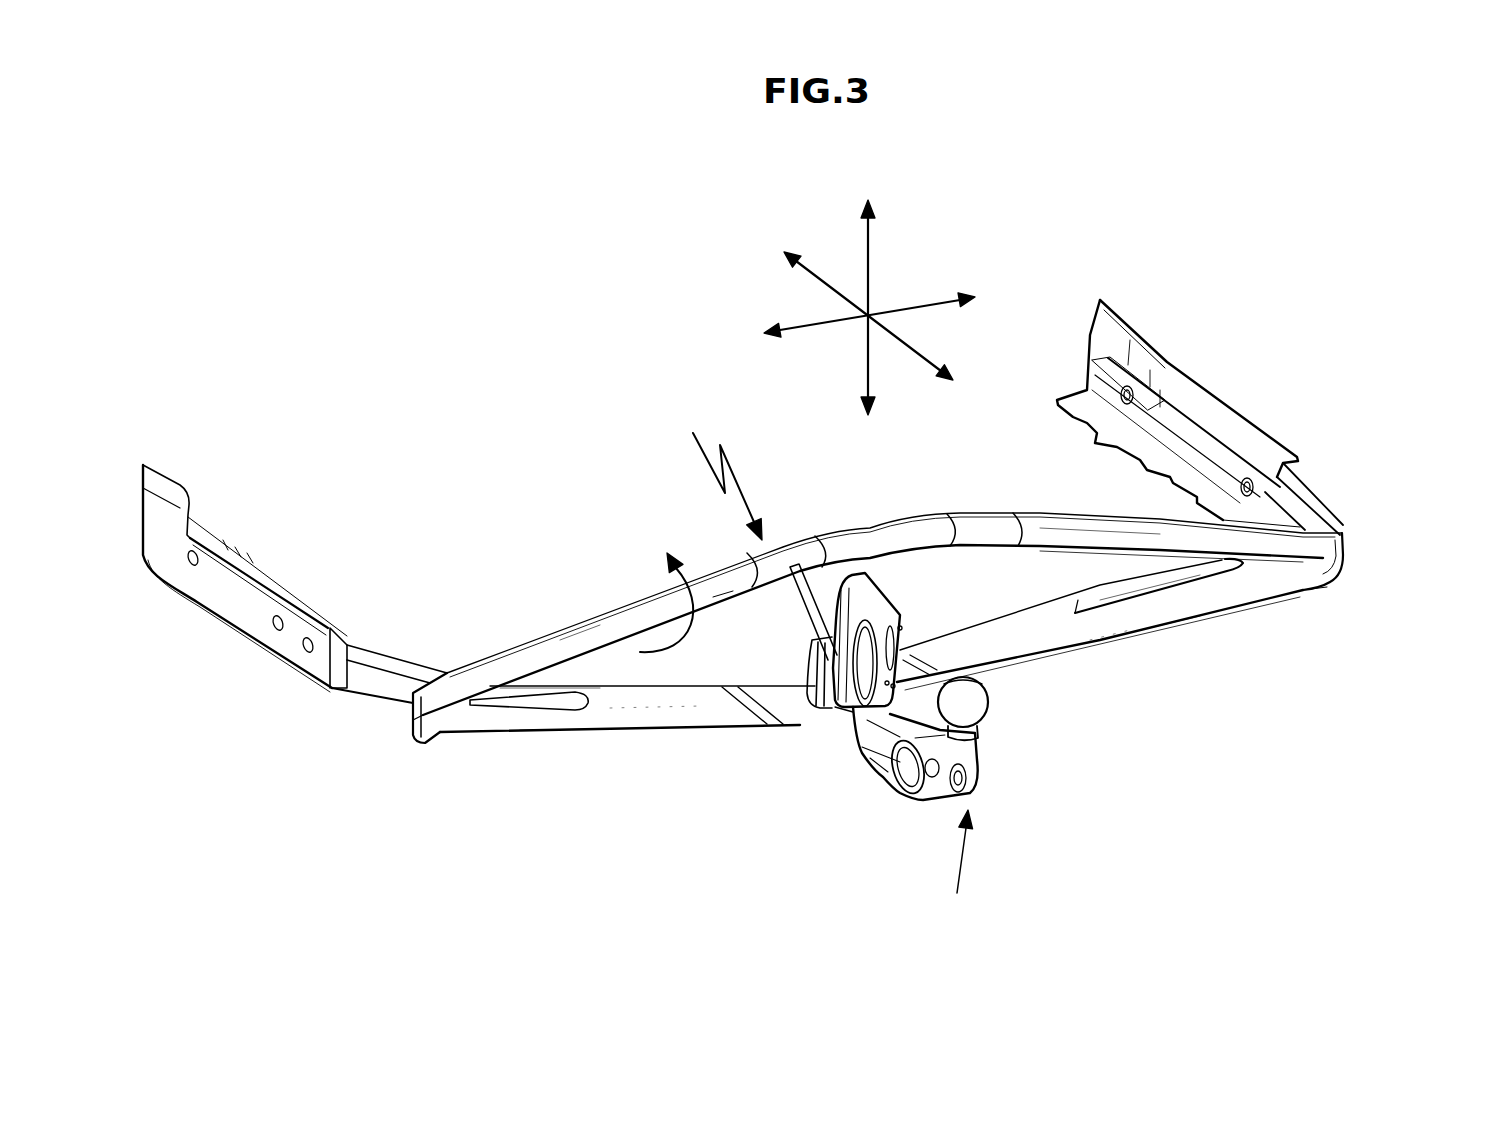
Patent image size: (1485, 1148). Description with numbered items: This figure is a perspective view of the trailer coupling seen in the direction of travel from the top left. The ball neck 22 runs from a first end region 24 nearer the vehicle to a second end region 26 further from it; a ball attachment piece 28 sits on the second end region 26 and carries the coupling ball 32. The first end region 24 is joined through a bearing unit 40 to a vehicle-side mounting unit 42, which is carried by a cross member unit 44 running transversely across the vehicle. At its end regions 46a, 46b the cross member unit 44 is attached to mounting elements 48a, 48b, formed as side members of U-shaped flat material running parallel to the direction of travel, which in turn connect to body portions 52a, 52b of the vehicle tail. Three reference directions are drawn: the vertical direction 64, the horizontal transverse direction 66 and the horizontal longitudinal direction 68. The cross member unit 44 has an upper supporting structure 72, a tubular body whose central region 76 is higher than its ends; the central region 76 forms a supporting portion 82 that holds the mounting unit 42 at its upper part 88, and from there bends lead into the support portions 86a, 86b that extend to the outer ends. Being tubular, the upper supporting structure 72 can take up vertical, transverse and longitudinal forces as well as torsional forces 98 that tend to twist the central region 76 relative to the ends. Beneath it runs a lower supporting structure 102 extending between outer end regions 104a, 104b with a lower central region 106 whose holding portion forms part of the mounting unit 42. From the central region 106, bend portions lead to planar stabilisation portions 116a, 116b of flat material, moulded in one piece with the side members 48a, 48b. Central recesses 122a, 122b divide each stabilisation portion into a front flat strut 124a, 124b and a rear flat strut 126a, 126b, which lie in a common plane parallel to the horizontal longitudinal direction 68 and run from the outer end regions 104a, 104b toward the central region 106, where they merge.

The ball neck 22 is at (959, 869).
The first end region 24 is at (877, 720).
The second end region 26 is at (987, 757).
The ball attachment piece 28 is at (977, 730).
The coupling ball 32 is at (980, 698).
The bearing unit 40 is at (922, 605).
The vehicle-side mounting unit 42 is at (809, 629).
The cross member unit 44 is at (721, 470).
The end region of cross member unit 46a is at (418, 707).
The end region of cross member unit 46b is at (1336, 556).
The mounting element 48a is at (380, 688).
The mounting element 48b is at (1313, 528).
The body portion 52a is at (228, 592).
The body portion 52b is at (1217, 408).
The vertical direction 64 is at (868, 265).
The horizontal transverse direction 66 is at (838, 322).
The horizontal longitudinal direction 68 is at (840, 292).
The upper supporting structure 72 is at (956, 505).
The central region 76 is at (901, 537).
The supporting portion 82 is at (857, 543).
The support portion 86a is at (573, 638).
The support portion 86b is at (1067, 530).
The upper part of mounting unit 88 is at (833, 580).
The torsional forces 98 is at (627, 600).
The lower supporting structure 102 is at (697, 735).
The outer end region of lower supporting structure 104a is at (437, 748).
The outer end region of lower supporting structure 104b is at (1320, 592).
The central region of lower supporting structure 106 is at (823, 738).
The stabilisation portion 116a is at (635, 710).
The stabilisation portion 116b is at (1103, 623).
The central recess 122a is at (507, 705).
The central recess 122b is at (1210, 580).
The front flat strut 124a is at (540, 690).
The front flat strut 124b is at (1140, 583).
The rear flat strut 126a is at (554, 720).
The rear flat strut 126b is at (1168, 612).